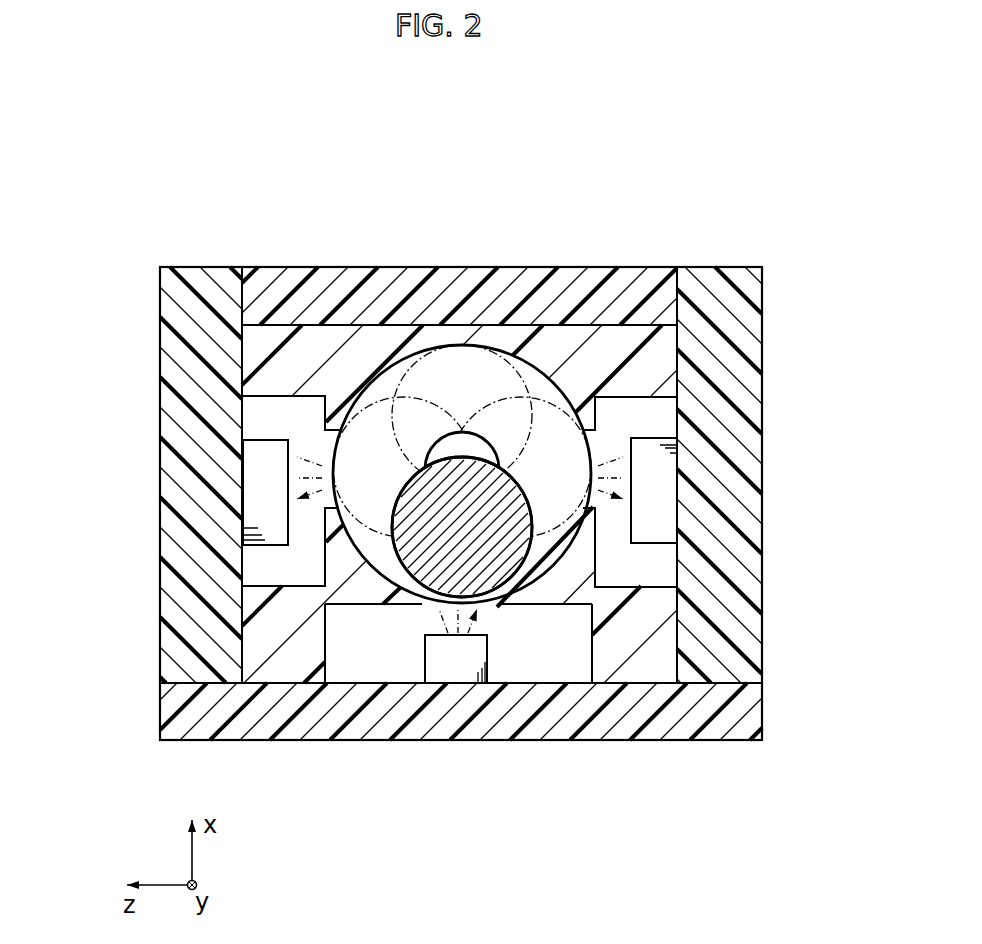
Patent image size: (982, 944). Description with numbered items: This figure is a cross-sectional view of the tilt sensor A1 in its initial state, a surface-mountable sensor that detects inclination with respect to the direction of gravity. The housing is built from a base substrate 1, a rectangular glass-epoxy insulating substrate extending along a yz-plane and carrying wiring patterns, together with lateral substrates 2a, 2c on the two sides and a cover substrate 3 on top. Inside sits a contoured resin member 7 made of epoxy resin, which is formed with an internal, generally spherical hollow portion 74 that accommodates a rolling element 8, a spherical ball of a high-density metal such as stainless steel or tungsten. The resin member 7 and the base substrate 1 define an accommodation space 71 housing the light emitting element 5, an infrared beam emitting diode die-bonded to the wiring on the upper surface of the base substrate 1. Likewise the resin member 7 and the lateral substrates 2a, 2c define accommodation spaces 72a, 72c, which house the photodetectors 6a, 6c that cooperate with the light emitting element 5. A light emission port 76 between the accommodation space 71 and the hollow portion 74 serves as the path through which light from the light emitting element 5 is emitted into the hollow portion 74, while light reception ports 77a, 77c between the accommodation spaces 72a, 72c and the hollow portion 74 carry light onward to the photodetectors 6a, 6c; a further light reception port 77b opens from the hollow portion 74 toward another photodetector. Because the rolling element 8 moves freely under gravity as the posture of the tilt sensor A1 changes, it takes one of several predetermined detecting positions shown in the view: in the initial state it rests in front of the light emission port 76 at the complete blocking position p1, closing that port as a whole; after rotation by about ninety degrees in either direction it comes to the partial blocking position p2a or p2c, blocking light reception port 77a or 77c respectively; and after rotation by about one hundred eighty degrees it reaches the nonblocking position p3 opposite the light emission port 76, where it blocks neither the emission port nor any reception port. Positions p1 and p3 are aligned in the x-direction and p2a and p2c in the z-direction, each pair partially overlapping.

The tilt sensor A1 is at (153, 172).
The base substrate 1 is at (693, 713).
The lateral substrate 2a is at (215, 435).
The lateral substrate 2c is at (728, 483).
The cover substrate 3 is at (460, 297).
The light emitting element 5 is at (442, 662).
The photodetector 6a is at (257, 497).
The photodetector 6c is at (660, 520).
The contoured resin member 7 is at (471, 484).
The rolling element 8 is at (520, 505).
The accommodation space 71 is at (373, 662).
The accommodation space 72a is at (257, 568).
The accommodation space 72c is at (660, 577).
The hollow portion 74 is at (373, 393).
The light emission port 76 is at (488, 602).
The light reception port 77a is at (327, 445).
The light reception port 77b is at (472, 438).
The light reception port 77c is at (595, 440).
The complete blocking position p1 is at (527, 563).
The partial blocking position p2a is at (372, 403).
The partial blocking position p2c is at (560, 410).
The nonblocking position p3 is at (405, 375).